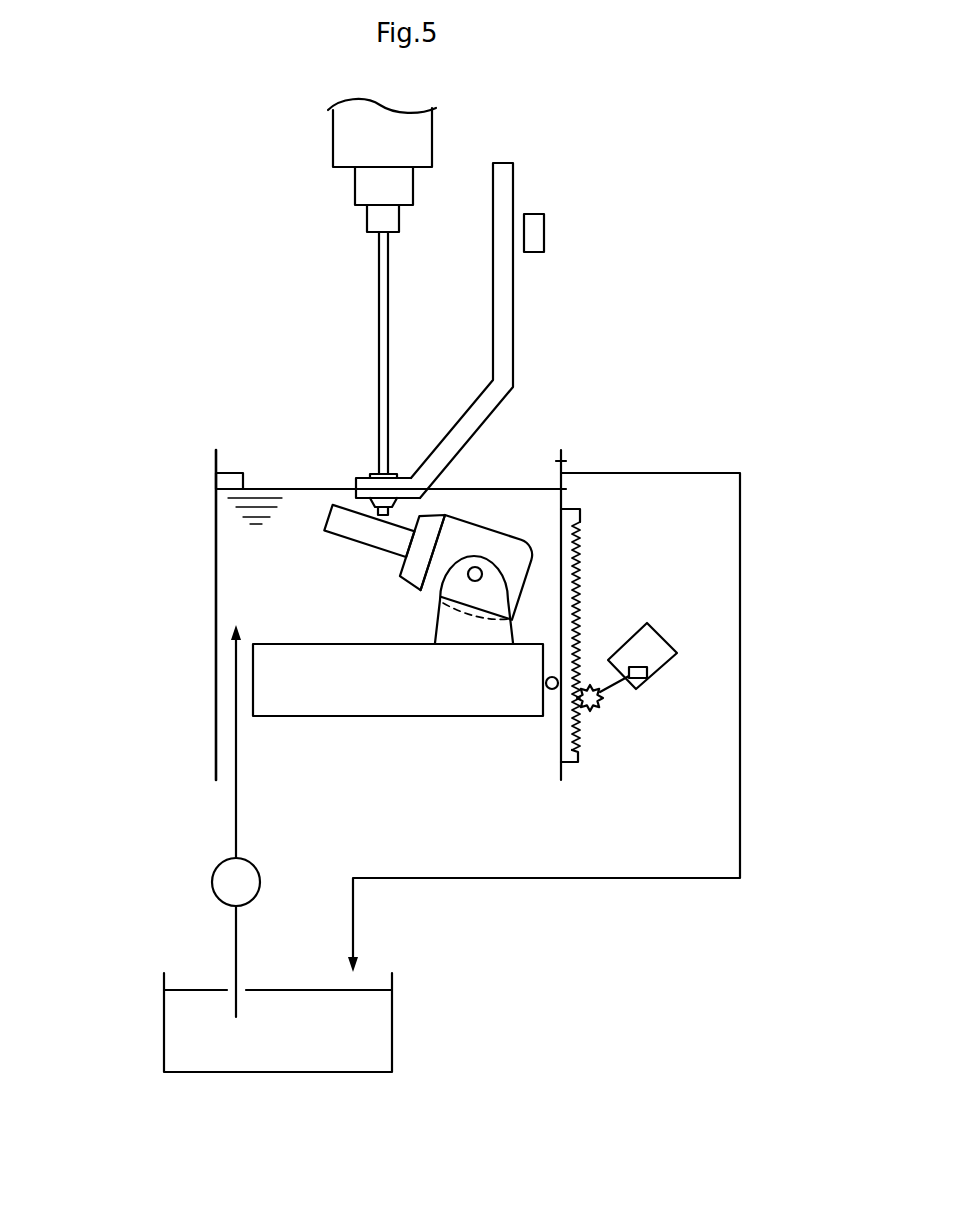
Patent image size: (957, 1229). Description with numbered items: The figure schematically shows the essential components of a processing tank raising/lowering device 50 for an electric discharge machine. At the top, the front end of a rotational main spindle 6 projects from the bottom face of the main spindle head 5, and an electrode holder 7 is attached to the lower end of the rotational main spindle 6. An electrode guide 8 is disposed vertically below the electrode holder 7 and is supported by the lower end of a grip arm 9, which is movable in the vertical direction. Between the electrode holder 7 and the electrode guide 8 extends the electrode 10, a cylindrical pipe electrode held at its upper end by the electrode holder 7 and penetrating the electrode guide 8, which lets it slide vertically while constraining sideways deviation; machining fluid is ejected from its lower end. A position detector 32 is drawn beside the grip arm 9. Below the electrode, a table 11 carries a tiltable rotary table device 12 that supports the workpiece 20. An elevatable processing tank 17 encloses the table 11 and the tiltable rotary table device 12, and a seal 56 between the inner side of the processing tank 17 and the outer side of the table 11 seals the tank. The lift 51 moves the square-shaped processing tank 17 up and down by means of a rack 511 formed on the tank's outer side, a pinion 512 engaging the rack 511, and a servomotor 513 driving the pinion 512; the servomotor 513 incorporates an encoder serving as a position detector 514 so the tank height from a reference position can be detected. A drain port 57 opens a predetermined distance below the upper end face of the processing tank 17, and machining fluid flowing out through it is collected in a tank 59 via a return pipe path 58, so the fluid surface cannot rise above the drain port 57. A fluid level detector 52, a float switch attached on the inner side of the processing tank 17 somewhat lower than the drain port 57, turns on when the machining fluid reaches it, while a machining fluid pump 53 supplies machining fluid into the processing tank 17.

The main spindle head 5 is at (334, 125).
The rotational main spindle 6 is at (355, 187).
The electrode holder 7 is at (367, 219).
The electrode guide 8 is at (392, 476).
The grip arm 9 is at (513, 283).
The electrode 10 is at (379, 294).
The table 11 is at (443, 718).
The tiltable rotary table device 12 is at (503, 517).
The processing tank 17 is at (212, 581).
The workpiece 20 is at (363, 548).
The position detector 32 is at (544, 234).
The processing tank raising/lowering device 50 is at (580, 632).
The lift 51 is at (649, 656).
The fluid level detector 52 is at (243, 470).
The machining fluid pump 53 is at (257, 868).
The seal 56 is at (552, 690).
The drain port 57 is at (562, 463).
The return pipe path 58 is at (740, 682).
The tank 59 is at (393, 1010).
The rack 511 is at (580, 547).
The pinion 512 is at (602, 710).
The servomotor 513 is at (647, 672).
The position detector 514 is at (635, 687).